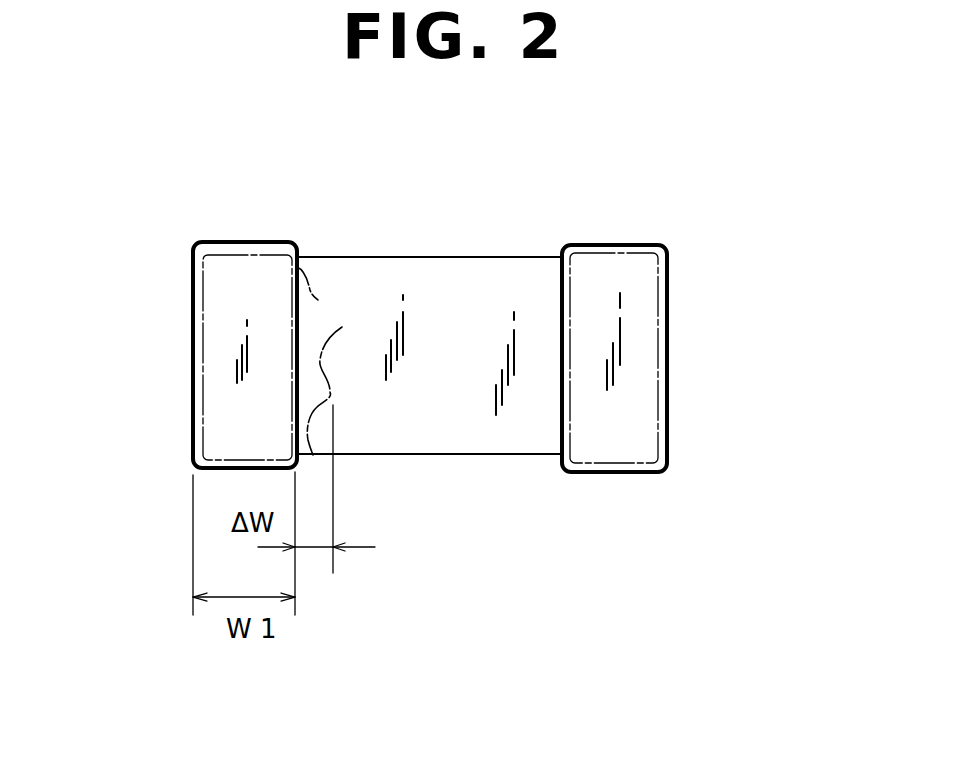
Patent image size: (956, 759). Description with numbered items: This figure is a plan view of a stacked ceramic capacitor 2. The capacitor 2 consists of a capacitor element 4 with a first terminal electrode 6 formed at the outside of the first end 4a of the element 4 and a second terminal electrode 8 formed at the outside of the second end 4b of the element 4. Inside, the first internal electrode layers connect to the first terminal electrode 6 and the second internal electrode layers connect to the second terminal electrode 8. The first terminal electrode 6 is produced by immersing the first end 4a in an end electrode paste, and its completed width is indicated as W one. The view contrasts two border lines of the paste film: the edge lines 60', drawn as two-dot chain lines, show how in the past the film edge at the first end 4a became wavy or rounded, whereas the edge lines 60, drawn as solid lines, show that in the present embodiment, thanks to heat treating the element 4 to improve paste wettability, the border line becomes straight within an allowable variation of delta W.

The stacked ceramic capacitor 2 is at (516, 236).
The capacitor element 4 is at (452, 285).
The first end of the capacitor element 4a is at (230, 392).
The second end of the capacitor element 4b is at (622, 376).
The first terminal electrode 6 is at (252, 268).
The second terminal electrode 8 is at (632, 311).
The edge line of the paste film 60 is at (313, 241).
The edge line of the paste film (prior art) 60' is at (360, 308).